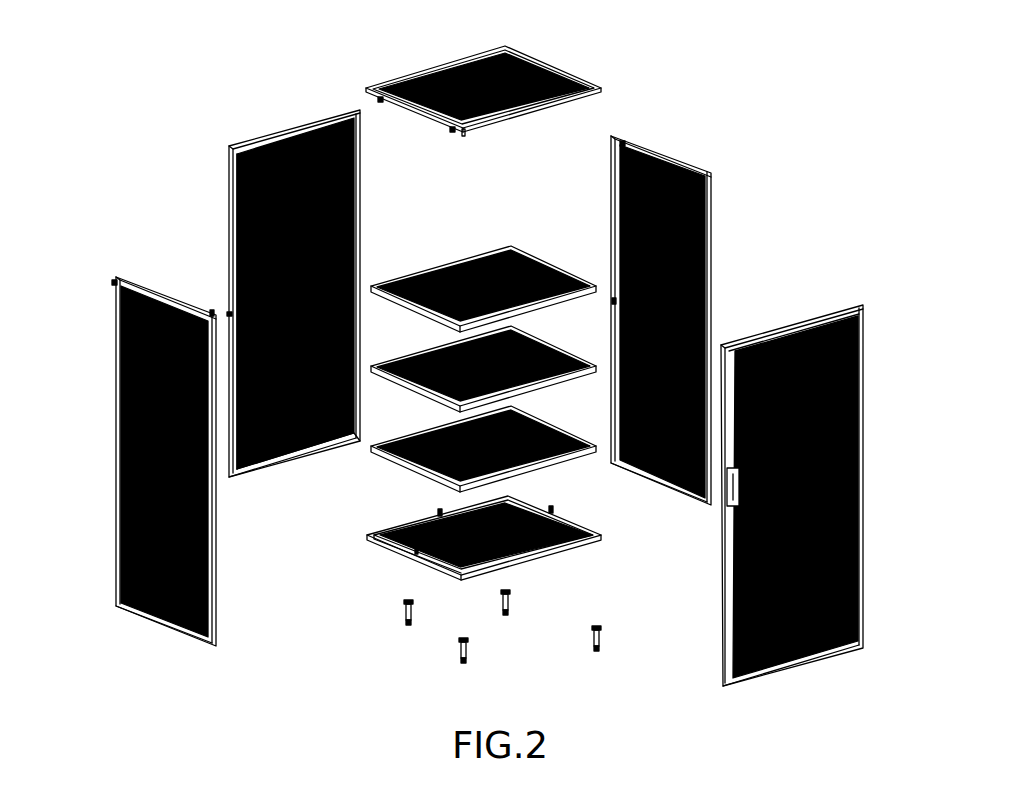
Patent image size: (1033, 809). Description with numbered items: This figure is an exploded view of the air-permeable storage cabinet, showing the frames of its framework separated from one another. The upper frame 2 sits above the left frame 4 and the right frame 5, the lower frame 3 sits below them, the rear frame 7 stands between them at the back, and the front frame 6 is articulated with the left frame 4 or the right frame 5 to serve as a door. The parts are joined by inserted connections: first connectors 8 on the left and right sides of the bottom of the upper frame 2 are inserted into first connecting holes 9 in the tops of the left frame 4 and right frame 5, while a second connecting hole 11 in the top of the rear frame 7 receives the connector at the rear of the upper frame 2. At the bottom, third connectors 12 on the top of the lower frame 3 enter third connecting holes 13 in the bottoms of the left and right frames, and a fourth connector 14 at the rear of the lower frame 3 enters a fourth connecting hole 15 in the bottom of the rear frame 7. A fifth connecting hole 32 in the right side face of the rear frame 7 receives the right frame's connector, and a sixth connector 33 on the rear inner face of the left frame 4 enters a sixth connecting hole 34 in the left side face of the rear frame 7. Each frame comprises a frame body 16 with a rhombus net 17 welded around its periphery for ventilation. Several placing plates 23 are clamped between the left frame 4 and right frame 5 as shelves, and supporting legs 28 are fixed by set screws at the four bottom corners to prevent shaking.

The upper frame 2 is at (485, 84).
The lower frame 3 is at (445, 581).
The left frame 4 is at (132, 461).
The right frame 5 is at (707, 401).
The front frame 6 is at (831, 495).
The rear frame 7 is at (244, 378).
The first connector 8 is at (366, 90).
The first connecting hole 9 is at (106, 276).
The second connecting hole 11 is at (283, 120).
The third connector 12 is at (405, 543).
The third connecting hole 13 is at (655, 475).
The fourth connector 14 is at (378, 540).
The fourth connecting hole 15 is at (288, 448).
The frame body 16 is at (853, 422).
The rhombus net 17 is at (853, 448).
The placing plate 23 is at (485, 474).
The supporting leg 28 is at (450, 638).
The fifth connecting hole 32 is at (219, 187).
The sixth connector 33 is at (112, 437).
The sixth connecting hole 34 is at (220, 306).